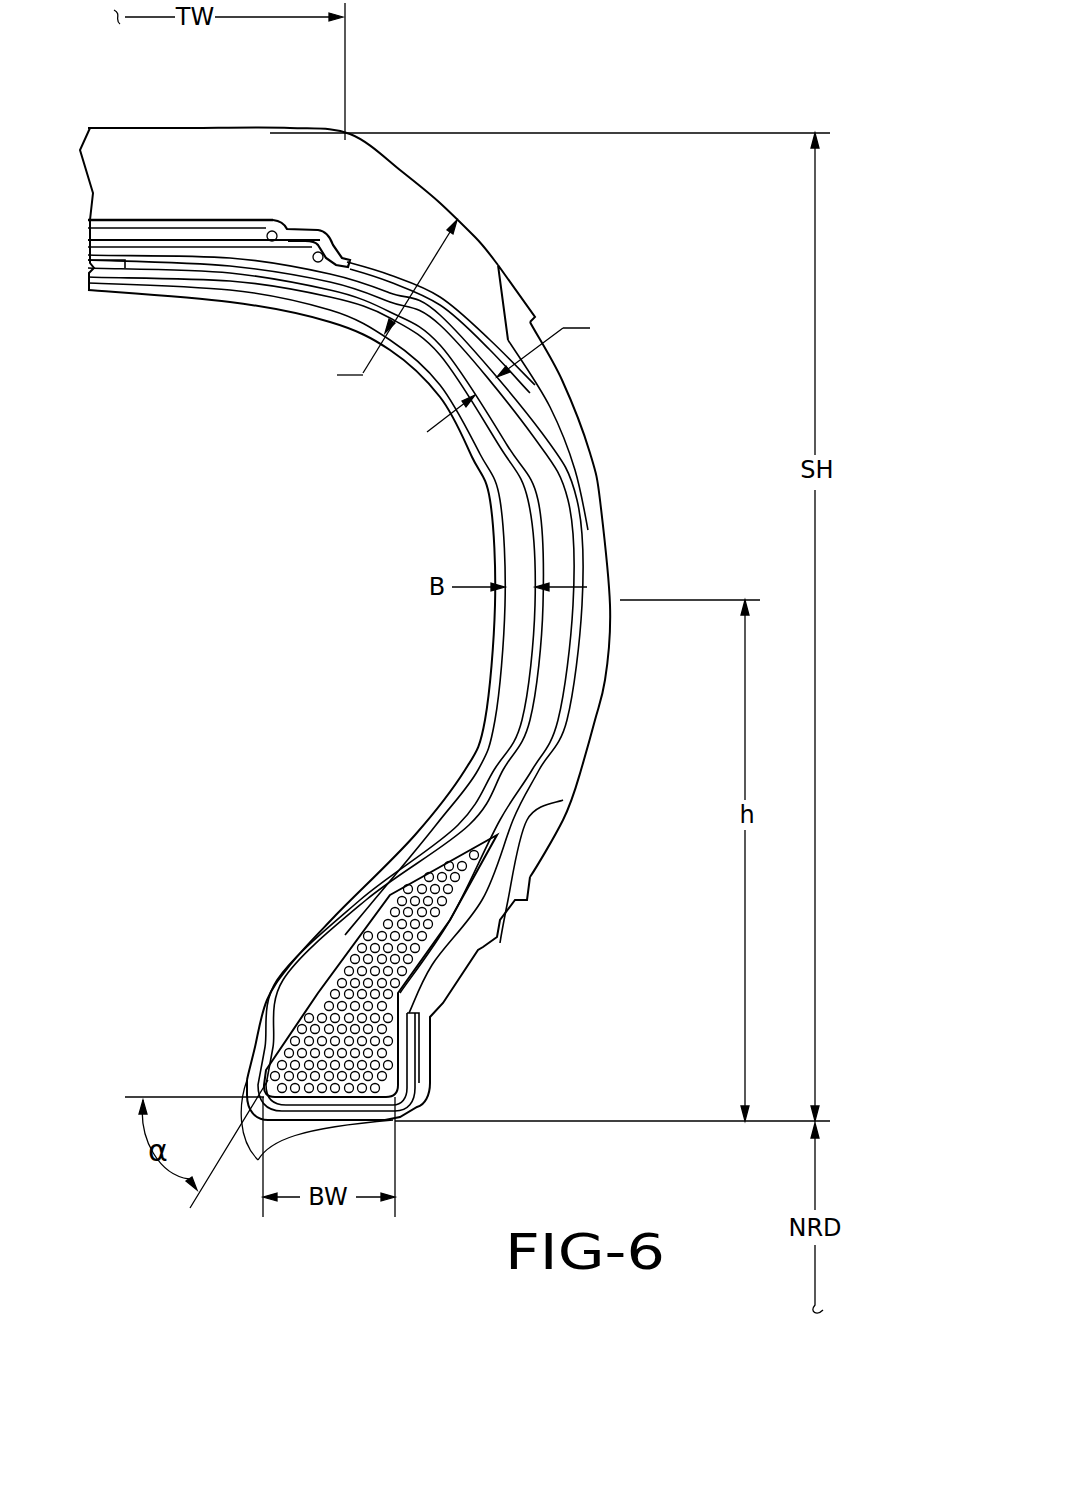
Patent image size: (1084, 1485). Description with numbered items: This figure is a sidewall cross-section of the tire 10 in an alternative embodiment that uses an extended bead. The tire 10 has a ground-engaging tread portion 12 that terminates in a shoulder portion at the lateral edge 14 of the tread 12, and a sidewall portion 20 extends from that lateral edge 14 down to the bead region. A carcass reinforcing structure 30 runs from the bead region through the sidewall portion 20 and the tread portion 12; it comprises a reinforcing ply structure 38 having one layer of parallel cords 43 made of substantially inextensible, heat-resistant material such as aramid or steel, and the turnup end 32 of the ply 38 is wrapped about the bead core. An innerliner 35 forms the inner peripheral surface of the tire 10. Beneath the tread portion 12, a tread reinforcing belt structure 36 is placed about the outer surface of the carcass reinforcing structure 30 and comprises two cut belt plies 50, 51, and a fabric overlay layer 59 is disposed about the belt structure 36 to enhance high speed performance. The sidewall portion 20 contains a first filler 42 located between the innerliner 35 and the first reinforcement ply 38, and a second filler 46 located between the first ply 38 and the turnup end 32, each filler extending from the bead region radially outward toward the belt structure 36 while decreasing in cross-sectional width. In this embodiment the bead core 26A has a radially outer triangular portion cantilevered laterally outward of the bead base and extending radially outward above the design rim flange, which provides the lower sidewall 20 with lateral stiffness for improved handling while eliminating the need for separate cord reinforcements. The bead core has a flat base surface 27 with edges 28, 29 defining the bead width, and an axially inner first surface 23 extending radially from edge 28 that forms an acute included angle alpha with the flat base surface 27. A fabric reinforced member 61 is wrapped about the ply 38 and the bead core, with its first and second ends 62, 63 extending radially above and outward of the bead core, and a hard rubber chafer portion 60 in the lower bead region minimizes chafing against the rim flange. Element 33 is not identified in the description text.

The tire 10 is at (390, 96).
The tread portion 12 is at (115, 128).
The lateral edge of the tread 14 is at (352, 149).
The sidewall portion 20 is at (602, 558).
The axially inner first surface of the bead core 23 is at (280, 1050).
The bead core 26A is at (385, 942).
The flat base surface of the bead core 27 is at (367, 1100).
The edge of the flat base surface 28 is at (290, 1100).
The edge of the flat base surface 29 is at (398, 1115).
The carcass reinforcing structure 30 is at (178, 288).
The turnup end of the ply 32 is at (580, 638).
The belt ply 33 is at (137, 266).
The innerliner 35 is at (383, 897).
The tread reinforcing belt structure 36 is at (103, 215).
The reinforcing ply structure 38 is at (507, 457).
The first filler 42 is at (512, 657).
The cords 43 is at (567, 493).
The second filler 46 is at (552, 530).
The belt ply 50 is at (250, 228).
The belt ply 51 is at (252, 253).
The fabric overlay layer 59 is at (175, 222).
The hard rubber chafer portion 60 is at (472, 960).
The fabric reinforced member 61 is at (290, 1000).
The first end of the fabric reinforced member 62 is at (315, 965).
The second end of the fabric reinforced member 63 is at (412, 1013).